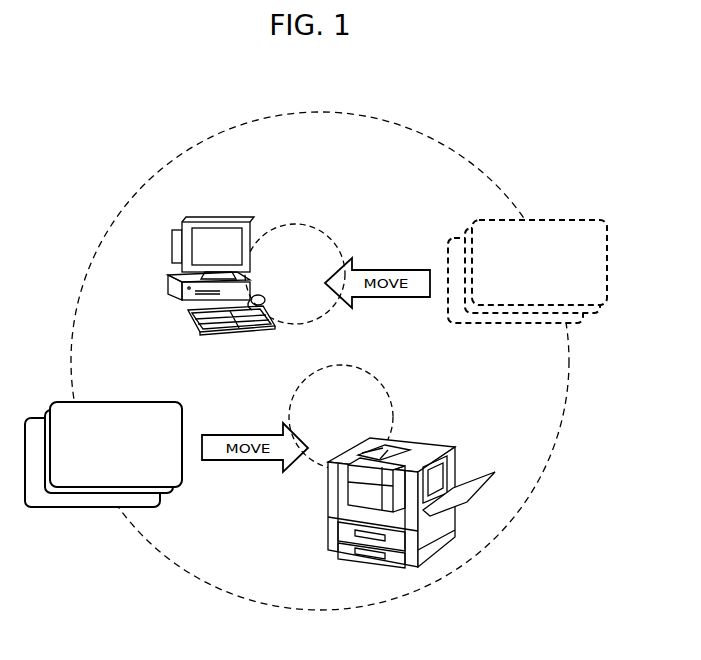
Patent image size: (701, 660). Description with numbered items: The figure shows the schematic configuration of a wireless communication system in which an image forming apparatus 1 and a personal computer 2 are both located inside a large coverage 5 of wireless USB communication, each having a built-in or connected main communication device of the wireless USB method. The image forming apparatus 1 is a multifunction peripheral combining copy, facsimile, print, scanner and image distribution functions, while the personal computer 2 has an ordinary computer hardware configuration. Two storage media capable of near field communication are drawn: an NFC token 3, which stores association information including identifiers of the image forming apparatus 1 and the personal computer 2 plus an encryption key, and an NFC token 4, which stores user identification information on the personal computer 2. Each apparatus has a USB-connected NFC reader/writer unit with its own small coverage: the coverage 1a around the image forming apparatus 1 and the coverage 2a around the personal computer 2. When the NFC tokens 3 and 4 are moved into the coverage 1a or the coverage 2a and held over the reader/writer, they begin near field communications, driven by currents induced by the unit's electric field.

The image forming apparatus 1 is at (418, 442).
The coverage of the NFC R/W unit of the image forming apparatus 1a is at (358, 368).
The personal computer 2 is at (215, 221).
The coverage of the NFC R/W unit of the personal computer 2a is at (297, 222).
The NFC token 3 is at (112, 402).
The NFC token 4 is at (37, 418).
The coverage of the wireless communication 5 is at (330, 111).